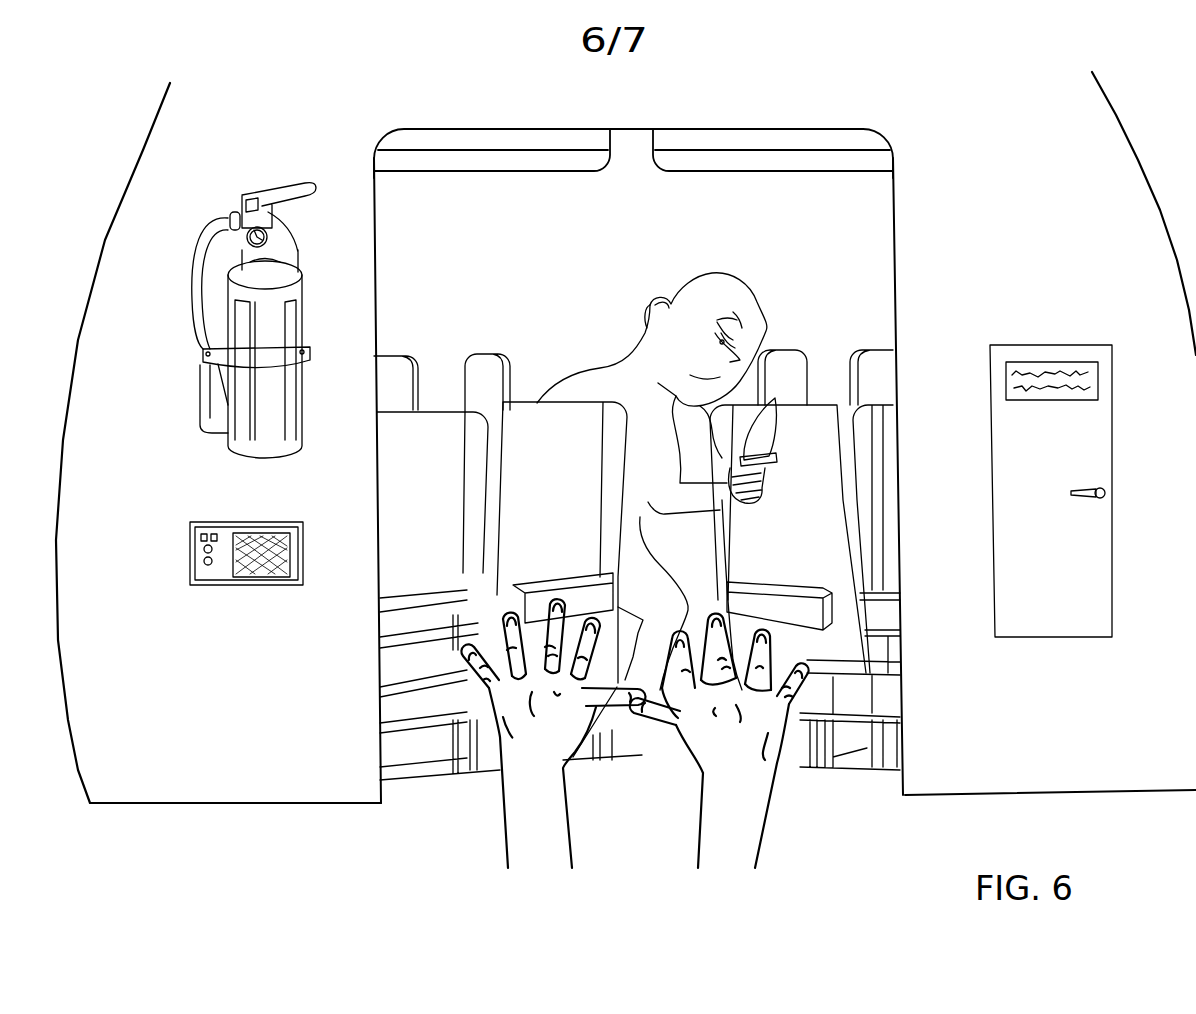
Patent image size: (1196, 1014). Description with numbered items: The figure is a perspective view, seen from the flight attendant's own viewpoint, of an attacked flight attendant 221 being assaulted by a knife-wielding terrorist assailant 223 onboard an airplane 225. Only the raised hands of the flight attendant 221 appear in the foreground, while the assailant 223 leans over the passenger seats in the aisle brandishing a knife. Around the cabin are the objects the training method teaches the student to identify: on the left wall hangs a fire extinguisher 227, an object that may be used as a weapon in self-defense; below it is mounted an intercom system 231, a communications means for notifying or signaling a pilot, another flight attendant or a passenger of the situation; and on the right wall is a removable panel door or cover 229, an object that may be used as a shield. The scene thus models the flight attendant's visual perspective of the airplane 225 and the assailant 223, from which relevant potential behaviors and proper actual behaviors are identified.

The attacked flight attendant 221 is at (624, 871).
The attacking terrorist assailant 223 is at (668, 270).
The airplane 225 is at (993, 58).
The fire extinguisher 227 is at (222, 190).
The removable panel door or cover 229 is at (1060, 659).
The intercom system 231 is at (241, 600).